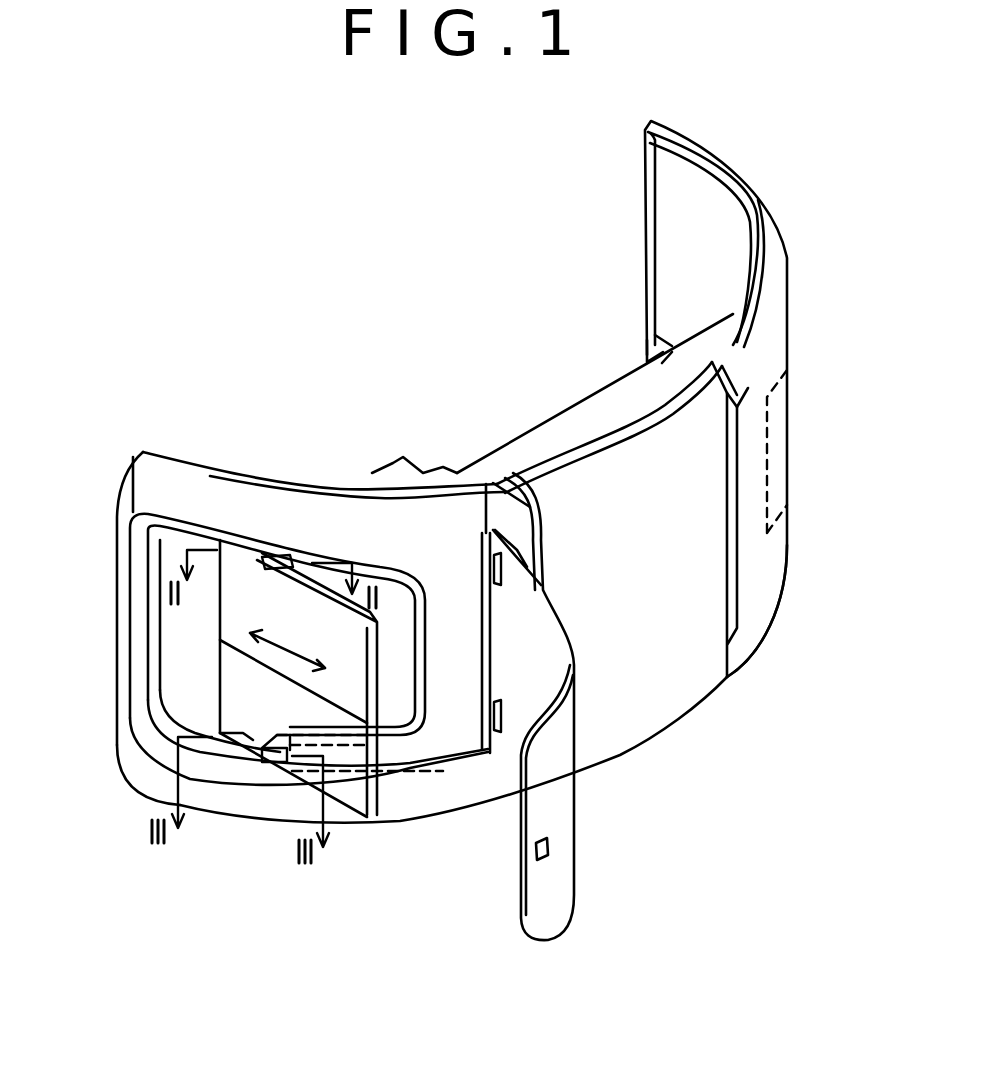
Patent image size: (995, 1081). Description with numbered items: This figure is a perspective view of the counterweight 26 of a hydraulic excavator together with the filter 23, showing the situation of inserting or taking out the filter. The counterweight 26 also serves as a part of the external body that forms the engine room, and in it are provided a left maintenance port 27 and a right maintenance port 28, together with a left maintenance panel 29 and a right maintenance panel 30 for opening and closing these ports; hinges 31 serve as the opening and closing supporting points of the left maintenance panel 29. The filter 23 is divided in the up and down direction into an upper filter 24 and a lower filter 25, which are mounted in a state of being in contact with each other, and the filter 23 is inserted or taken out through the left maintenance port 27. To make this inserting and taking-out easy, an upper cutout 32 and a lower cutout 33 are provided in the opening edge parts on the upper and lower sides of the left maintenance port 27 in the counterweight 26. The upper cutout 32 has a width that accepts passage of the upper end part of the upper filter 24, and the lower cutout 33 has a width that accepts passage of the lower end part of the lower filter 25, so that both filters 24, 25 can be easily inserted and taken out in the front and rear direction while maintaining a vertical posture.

The filter 23 is at (478, 893).
The upper filter 24 is at (375, 690).
The lower filter 25 is at (353, 793).
The counterweight 26 is at (687, 712).
The left maintenance port 27 is at (180, 655).
The right maintenance port 28 is at (777, 445).
The left maintenance panel 29 is at (560, 815).
The right maintenance panel 30 is at (753, 617).
The hinges 31 is at (505, 712).
The upper cutout 32 is at (292, 565).
The lower cutout 33 is at (258, 765).